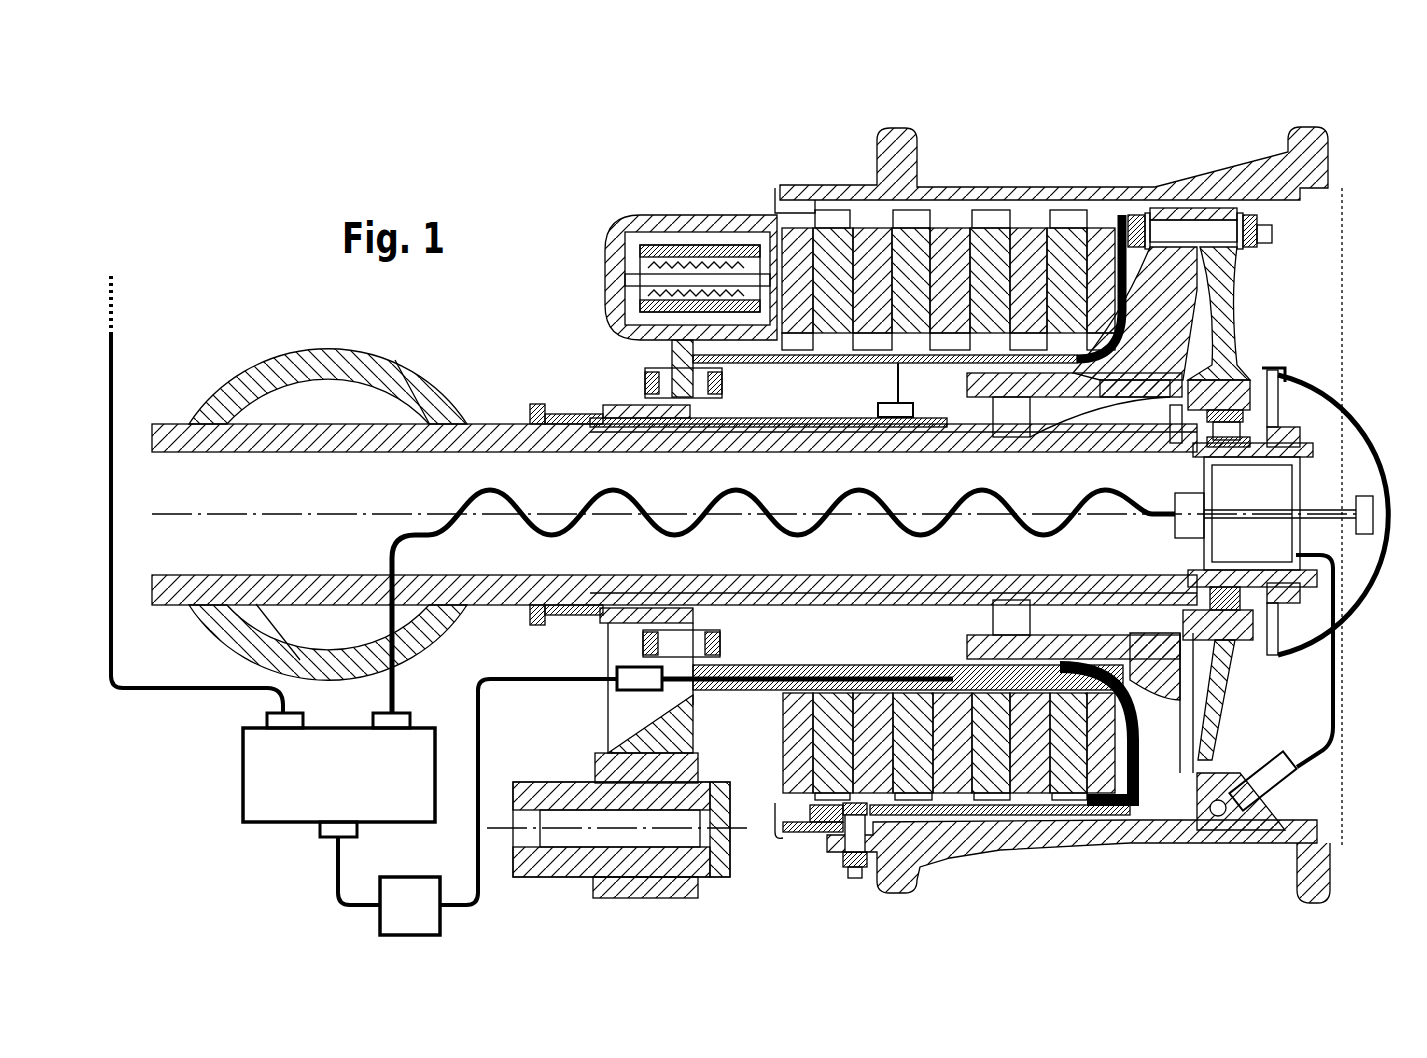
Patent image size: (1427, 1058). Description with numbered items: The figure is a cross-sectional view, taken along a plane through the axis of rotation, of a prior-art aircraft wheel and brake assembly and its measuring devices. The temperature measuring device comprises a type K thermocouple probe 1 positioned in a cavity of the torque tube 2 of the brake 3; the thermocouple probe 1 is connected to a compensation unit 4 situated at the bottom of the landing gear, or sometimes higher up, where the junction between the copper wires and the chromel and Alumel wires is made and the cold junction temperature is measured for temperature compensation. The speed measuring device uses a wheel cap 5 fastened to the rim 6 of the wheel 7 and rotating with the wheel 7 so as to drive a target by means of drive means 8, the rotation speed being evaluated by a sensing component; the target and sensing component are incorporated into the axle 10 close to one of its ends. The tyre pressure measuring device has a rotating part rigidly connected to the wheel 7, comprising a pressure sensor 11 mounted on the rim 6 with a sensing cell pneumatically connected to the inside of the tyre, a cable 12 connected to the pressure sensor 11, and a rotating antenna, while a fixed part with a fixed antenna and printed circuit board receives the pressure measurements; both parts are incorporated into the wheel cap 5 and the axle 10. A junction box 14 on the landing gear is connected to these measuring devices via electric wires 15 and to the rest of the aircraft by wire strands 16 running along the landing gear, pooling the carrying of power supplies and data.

The thermocouple probe 1 is at (870, 690).
The torque tube 2 is at (797, 665).
The brake 3 is at (665, 175).
The compensation unit 4 is at (418, 918).
The wheel cap 5 is at (1355, 435).
The rim 6 is at (1310, 163).
The wheel 7 is at (1345, 112).
The drive means 8 is at (1337, 527).
The axle 10 is at (1105, 392).
The pressure sensor 11 is at (1264, 773).
The cable 12 is at (1336, 685).
The junction box 14 is at (354, 790).
The electric wires 15 is at (397, 690).
The wire strands 16 is at (114, 355).